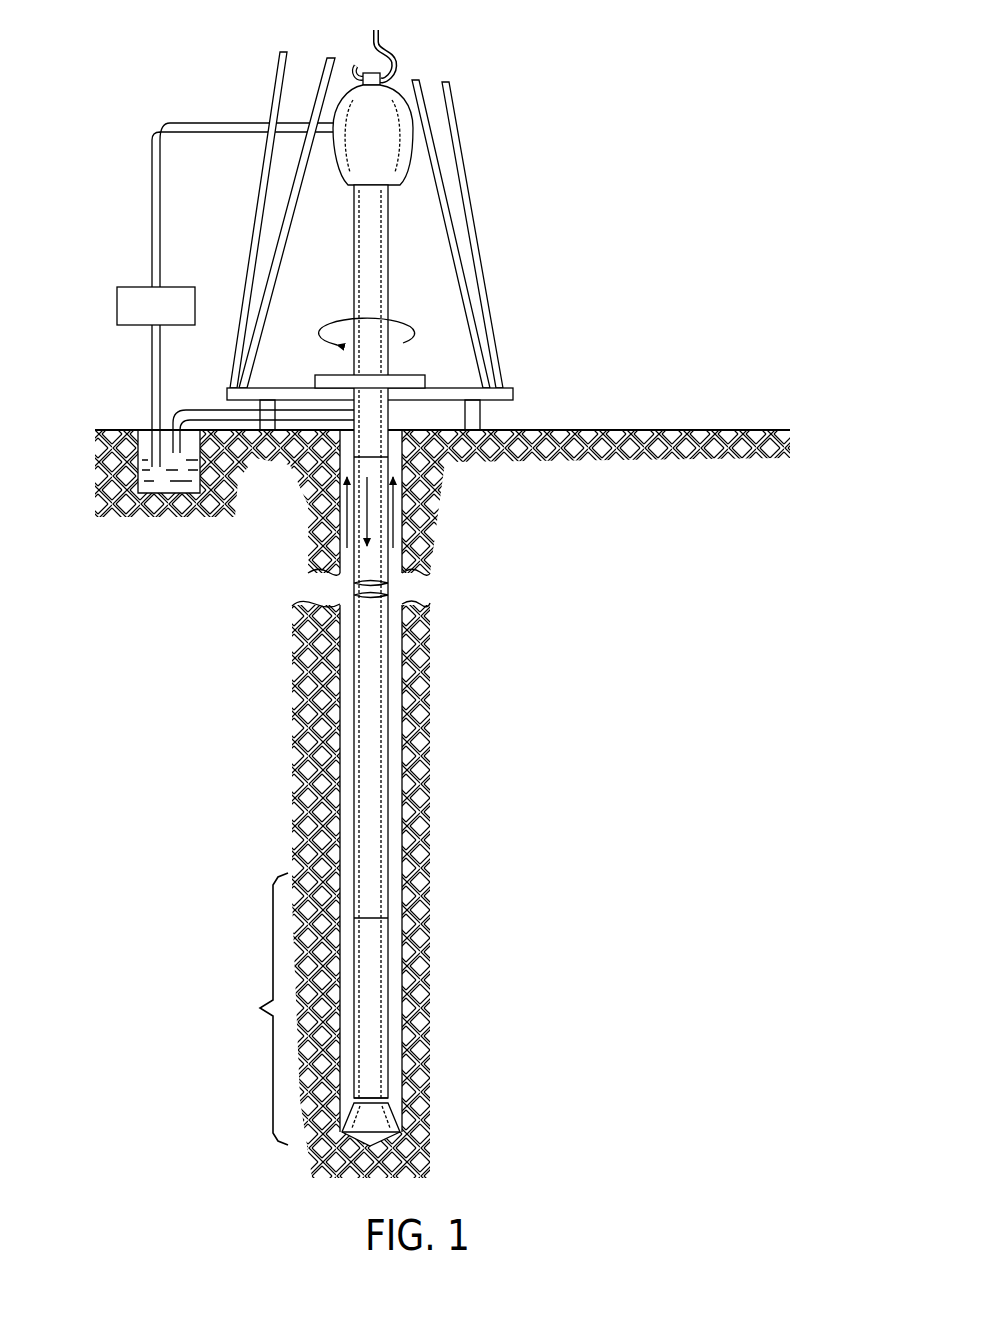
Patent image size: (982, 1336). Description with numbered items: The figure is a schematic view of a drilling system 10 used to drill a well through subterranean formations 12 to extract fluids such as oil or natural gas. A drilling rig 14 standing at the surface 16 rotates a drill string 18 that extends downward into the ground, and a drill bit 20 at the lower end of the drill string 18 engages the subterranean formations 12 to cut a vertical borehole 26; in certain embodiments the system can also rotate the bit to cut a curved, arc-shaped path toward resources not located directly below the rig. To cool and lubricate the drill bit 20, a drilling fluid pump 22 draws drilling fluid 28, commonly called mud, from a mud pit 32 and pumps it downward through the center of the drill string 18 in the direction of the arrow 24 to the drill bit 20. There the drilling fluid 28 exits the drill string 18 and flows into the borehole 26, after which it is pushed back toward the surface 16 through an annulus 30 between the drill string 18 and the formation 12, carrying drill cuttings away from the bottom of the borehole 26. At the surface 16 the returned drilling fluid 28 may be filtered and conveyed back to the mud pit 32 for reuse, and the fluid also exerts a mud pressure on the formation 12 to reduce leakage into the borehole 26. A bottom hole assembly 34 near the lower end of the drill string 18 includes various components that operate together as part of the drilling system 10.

The drilling system 10 is at (527, 38).
The subterranean formations 12 is at (535, 776).
The drilling rig 14 is at (477, 108).
The surface 16 is at (568, 428).
The drill string 18 is at (370, 428).
The drill bit 20 is at (377, 1120).
The drilling fluid pump 22 is at (117, 303).
The arrow 24 is at (367, 528).
The borehole 26 is at (340, 737).
The drilling fluid 28 is at (347, 513).
The annulus 30 is at (395, 438).
The mud pit 32 is at (173, 487).
The bottom hole assembly 34 is at (257, 1009).